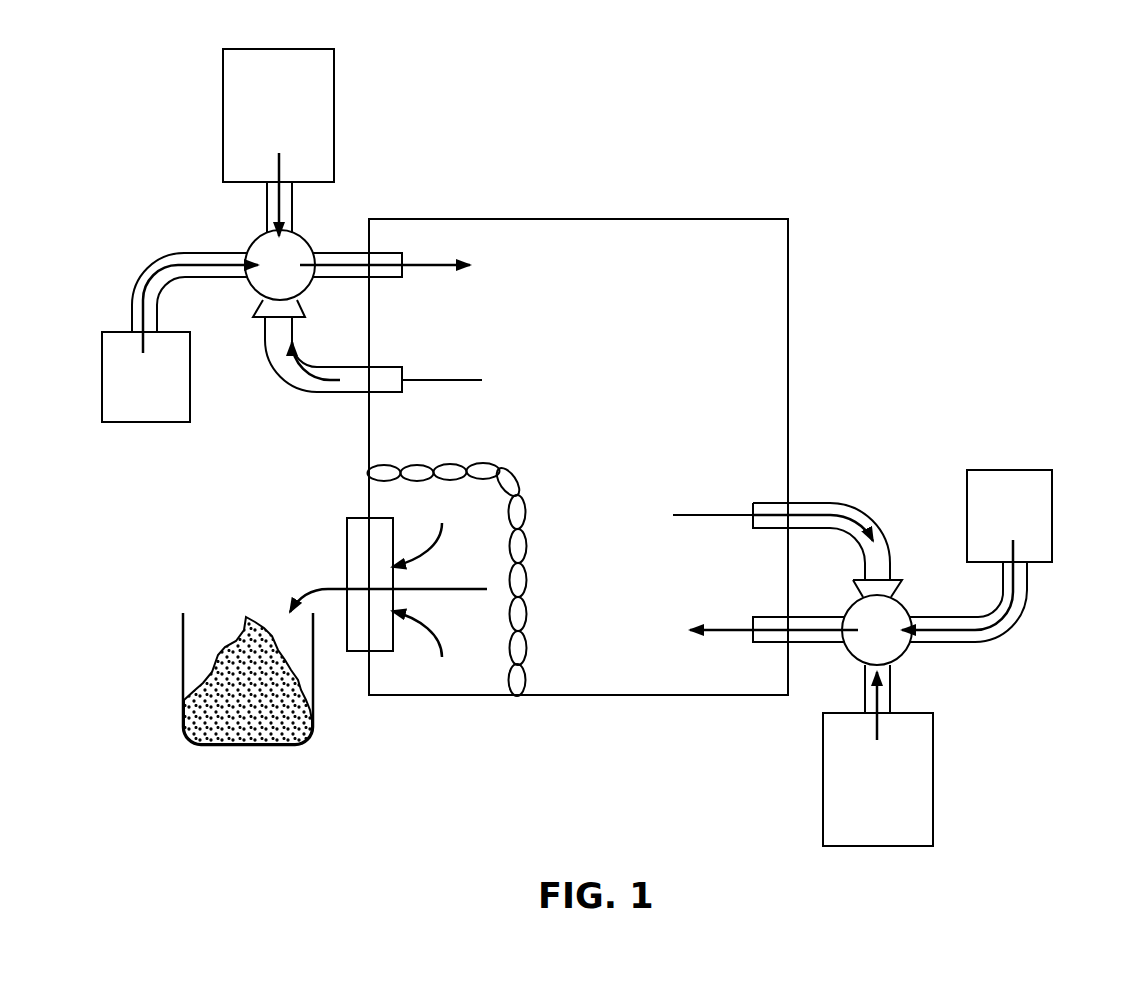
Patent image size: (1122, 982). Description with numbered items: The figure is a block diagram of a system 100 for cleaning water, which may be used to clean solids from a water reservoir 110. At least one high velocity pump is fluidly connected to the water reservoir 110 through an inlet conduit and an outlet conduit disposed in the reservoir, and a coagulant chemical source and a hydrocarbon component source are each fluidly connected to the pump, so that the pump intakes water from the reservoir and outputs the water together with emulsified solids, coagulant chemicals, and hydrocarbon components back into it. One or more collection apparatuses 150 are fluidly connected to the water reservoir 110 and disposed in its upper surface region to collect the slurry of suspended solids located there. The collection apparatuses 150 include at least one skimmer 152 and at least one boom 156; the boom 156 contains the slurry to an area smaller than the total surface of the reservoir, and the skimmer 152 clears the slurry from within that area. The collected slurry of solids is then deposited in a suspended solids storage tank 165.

The system 100 is at (730, 66).
The water reservoir 110 is at (790, 265).
The collection apparatus 150 is at (408, 657).
The skimmer 152 is at (382, 653).
The boom 156 is at (508, 673).
The suspended solids storage tank 165 is at (248, 745).